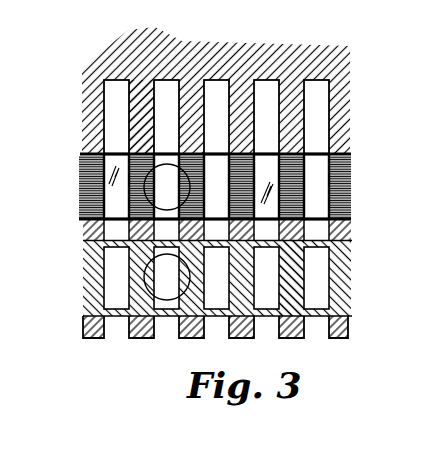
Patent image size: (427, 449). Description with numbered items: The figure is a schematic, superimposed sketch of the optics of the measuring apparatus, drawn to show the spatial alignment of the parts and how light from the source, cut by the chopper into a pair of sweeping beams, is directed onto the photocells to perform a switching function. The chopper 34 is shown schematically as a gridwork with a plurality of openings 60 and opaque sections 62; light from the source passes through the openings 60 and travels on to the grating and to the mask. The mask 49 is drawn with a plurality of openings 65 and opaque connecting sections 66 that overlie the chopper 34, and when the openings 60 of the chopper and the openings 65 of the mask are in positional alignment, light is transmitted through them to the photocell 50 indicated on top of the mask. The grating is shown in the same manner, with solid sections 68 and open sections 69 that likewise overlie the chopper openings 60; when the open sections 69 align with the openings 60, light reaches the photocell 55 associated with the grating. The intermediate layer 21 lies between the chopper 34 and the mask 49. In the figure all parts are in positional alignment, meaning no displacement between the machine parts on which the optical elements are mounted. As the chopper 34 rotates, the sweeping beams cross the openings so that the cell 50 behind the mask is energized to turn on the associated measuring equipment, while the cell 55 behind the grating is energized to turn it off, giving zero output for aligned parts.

The chopper 34 is at (154, 60).
The openings 60 is at (113, 100).
The opaque sections 62 is at (298, 323).
The photocell 55 is at (165, 164).
The intermediate layer 21 is at (72, 184).
The solid sections 68 is at (311, 154).
The open sections 69 is at (330, 180).
The mask 49 is at (78, 285).
The openings 65 is at (325, 278).
The opaque connecting sections 66 is at (302, 293).
The photocell 50 is at (168, 300).